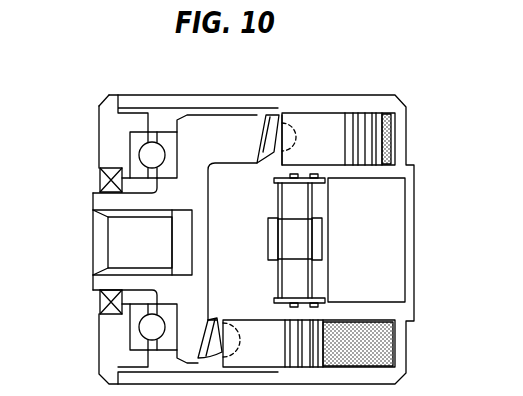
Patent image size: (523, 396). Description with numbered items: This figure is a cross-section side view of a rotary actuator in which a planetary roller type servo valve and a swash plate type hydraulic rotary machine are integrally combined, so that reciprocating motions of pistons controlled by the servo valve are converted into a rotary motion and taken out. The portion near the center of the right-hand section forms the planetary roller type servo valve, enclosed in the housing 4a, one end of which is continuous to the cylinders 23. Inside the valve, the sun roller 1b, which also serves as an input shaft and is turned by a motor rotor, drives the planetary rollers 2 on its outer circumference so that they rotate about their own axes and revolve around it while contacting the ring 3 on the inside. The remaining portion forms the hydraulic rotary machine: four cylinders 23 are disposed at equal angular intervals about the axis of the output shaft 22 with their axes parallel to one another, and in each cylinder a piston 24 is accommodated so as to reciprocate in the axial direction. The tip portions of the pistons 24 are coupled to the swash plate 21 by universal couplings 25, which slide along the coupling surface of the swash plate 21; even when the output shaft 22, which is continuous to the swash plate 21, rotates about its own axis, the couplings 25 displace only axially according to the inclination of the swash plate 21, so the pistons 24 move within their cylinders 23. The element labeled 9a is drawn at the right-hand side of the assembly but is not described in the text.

The swash plate 21 is at (223, 114).
The cylinders 23 is at (311, 110).
The pistons 24 is at (336, 128).
The housing of planetary roller type servo valve 4a is at (334, 162).
The yoke cover 9a is at (393, 231).
The planetary rollers 2 is at (300, 211).
The sun roller 1b is at (314, 241).
The ring 3 is at (324, 298).
The universal couplings 25 is at (218, 318).
The output shaft 22 is at (93, 239).